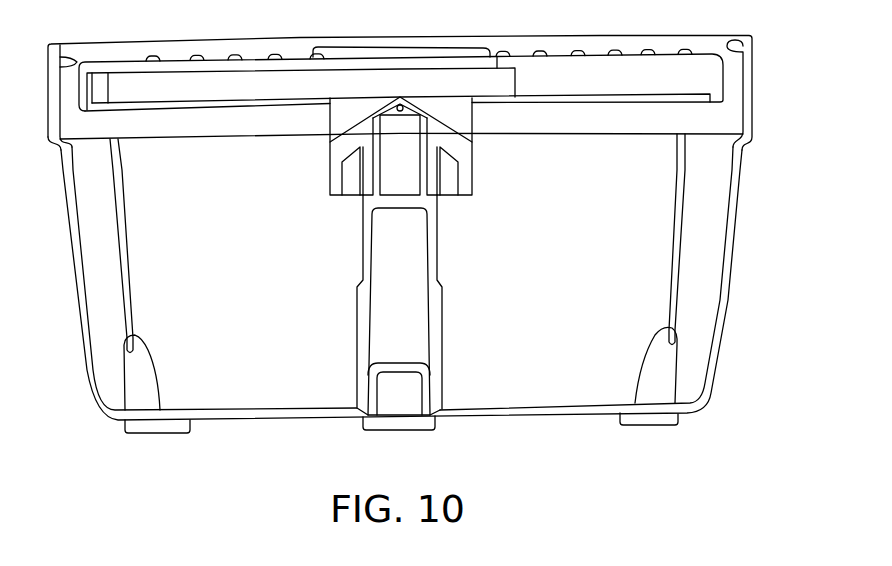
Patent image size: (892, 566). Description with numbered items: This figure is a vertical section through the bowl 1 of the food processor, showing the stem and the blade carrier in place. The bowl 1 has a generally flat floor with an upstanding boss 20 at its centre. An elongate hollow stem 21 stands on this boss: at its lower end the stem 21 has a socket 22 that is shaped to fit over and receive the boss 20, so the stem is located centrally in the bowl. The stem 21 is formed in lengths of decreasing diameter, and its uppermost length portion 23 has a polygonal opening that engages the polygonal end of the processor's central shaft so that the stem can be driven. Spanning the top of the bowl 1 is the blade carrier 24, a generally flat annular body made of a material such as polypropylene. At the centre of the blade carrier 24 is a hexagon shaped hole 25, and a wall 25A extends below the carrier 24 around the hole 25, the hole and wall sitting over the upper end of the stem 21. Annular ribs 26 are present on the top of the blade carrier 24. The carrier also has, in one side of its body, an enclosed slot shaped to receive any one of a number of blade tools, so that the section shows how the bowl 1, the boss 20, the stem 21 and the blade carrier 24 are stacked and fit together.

The bowl 1 is at (713, 365).
The boss 20 is at (406, 401).
The stem 21 is at (443, 312).
The socket 22 is at (427, 377).
The uppermost length portion 23 is at (372, 191).
The blade carrier 24 is at (655, 110).
The hexagon shaped hole 25 is at (403, 106).
The wall 25A is at (424, 177).
The annular ribs 26 is at (160, 57).